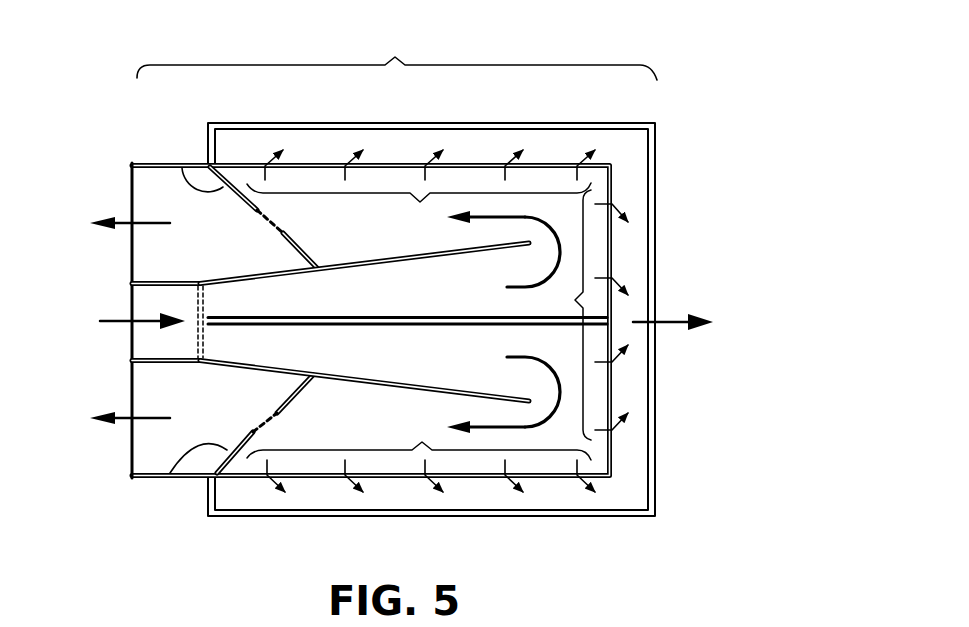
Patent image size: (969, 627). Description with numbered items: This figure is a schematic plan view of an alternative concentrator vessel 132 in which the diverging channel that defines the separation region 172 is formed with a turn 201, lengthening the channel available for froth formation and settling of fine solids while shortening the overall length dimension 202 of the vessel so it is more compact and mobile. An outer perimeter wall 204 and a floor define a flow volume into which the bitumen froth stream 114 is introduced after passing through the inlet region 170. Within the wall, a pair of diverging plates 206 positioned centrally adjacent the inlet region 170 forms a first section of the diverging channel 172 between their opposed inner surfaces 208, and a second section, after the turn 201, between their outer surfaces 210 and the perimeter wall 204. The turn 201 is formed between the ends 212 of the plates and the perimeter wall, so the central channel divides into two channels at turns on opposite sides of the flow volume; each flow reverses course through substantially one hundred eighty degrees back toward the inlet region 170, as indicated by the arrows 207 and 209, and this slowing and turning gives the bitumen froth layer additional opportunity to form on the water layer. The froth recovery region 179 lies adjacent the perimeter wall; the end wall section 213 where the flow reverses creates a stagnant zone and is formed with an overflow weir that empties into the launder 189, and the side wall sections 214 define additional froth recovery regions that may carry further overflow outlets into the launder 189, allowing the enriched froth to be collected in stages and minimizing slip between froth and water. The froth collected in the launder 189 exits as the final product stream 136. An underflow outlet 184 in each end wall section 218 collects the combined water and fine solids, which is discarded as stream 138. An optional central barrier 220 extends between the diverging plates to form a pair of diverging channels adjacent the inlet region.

The bitumen froth stream 114 is at (120, 318).
The concentrator vessel 132 is at (674, 150).
The final product stream 136 is at (663, 318).
The discarded stream 138 is at (106, 323).
The inlet region 170 is at (163, 281).
The separation region 172 is at (408, 307).
The froth recovery region 179 is at (419, 321).
The underflow outlet 184 is at (268, 225).
The launder 189 is at (628, 442).
The turn 201 is at (547, 220).
The overall length dimension 202 is at (397, 54).
The outer perimeter wall 204 is at (460, 160).
The diverging plates 206 is at (482, 245).
The flow arrow 207 is at (557, 258).
The inner surfaces 208 is at (475, 257).
The flow arrow 209 is at (558, 403).
The outer surfaces 210 is at (380, 258).
The ends of the plates 212 is at (553, 240).
The end wall section 213 is at (615, 383).
The side wall sections 214 is at (323, 162).
The end wall section 218 is at (175, 165).
The central barrier 220 is at (320, 316).